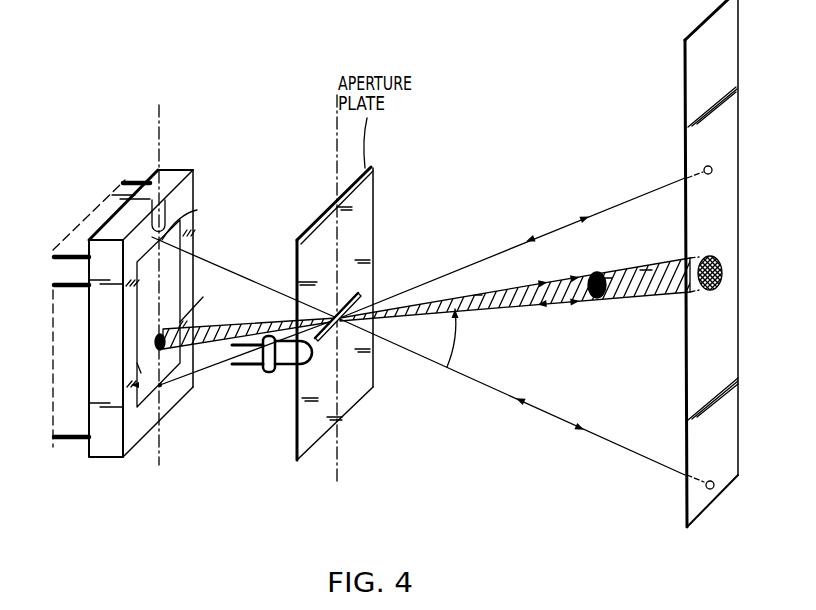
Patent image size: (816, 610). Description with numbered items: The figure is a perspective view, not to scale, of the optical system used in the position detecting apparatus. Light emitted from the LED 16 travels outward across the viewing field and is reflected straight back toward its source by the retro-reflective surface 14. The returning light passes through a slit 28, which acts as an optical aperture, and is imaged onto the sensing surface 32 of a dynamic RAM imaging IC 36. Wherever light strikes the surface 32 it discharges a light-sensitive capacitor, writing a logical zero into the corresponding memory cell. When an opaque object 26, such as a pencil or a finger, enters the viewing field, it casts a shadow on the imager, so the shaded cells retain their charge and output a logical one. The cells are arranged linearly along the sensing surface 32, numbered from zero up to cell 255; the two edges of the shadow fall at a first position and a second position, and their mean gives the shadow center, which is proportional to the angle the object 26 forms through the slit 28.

The dynamic RAM imaging IC 36 is at (160, 258).
The sensing surface 32 is at (435, 327).
The last memory cell position 255 is at (182, 411).
The LED 16 is at (264, 410).
The slit 28 is at (369, 285).
The opaque object 26 is at (609, 226).
The retro-reflective surface 14 is at (657, 263).